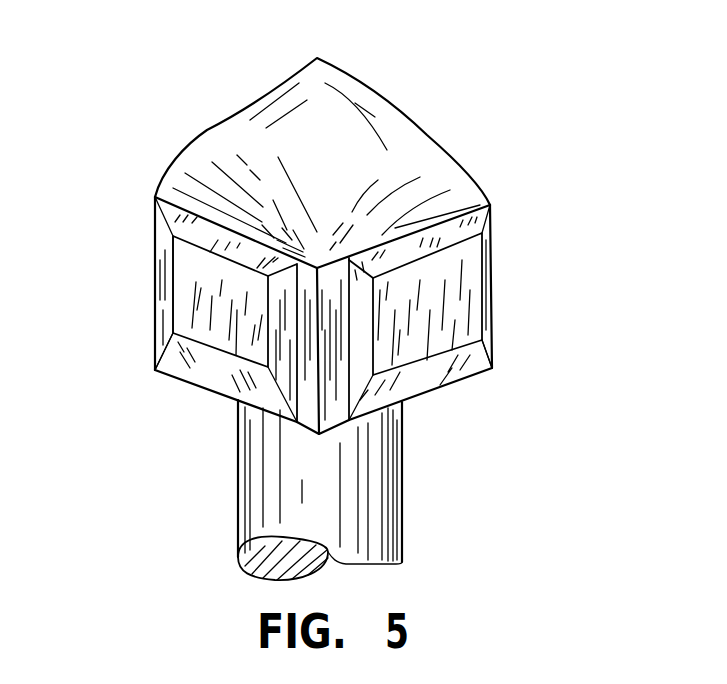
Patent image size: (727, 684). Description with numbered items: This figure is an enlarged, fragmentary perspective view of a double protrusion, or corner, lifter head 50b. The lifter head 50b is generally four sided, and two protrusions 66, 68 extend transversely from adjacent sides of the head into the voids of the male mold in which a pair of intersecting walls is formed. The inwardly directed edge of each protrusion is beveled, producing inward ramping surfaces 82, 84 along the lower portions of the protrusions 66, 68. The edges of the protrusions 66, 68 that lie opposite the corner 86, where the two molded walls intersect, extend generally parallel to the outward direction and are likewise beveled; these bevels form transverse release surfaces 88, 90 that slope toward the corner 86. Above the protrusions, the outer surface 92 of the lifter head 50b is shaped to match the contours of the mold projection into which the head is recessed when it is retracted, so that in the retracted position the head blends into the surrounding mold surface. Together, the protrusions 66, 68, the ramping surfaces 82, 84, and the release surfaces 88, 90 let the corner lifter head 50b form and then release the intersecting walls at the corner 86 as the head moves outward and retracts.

The corner lifter head 50b is at (448, 150).
The outer surface 92 is at (353, 108).
The protrusion 66 is at (183, 257).
The protrusion 68 is at (468, 277).
The transverse release surface 88 is at (153, 290).
The transverse release surface 90 is at (492, 318).
The inward ramping surface 82 is at (208, 373).
The inward ramping surface 84 is at (420, 380).
The corner 86 is at (310, 412).